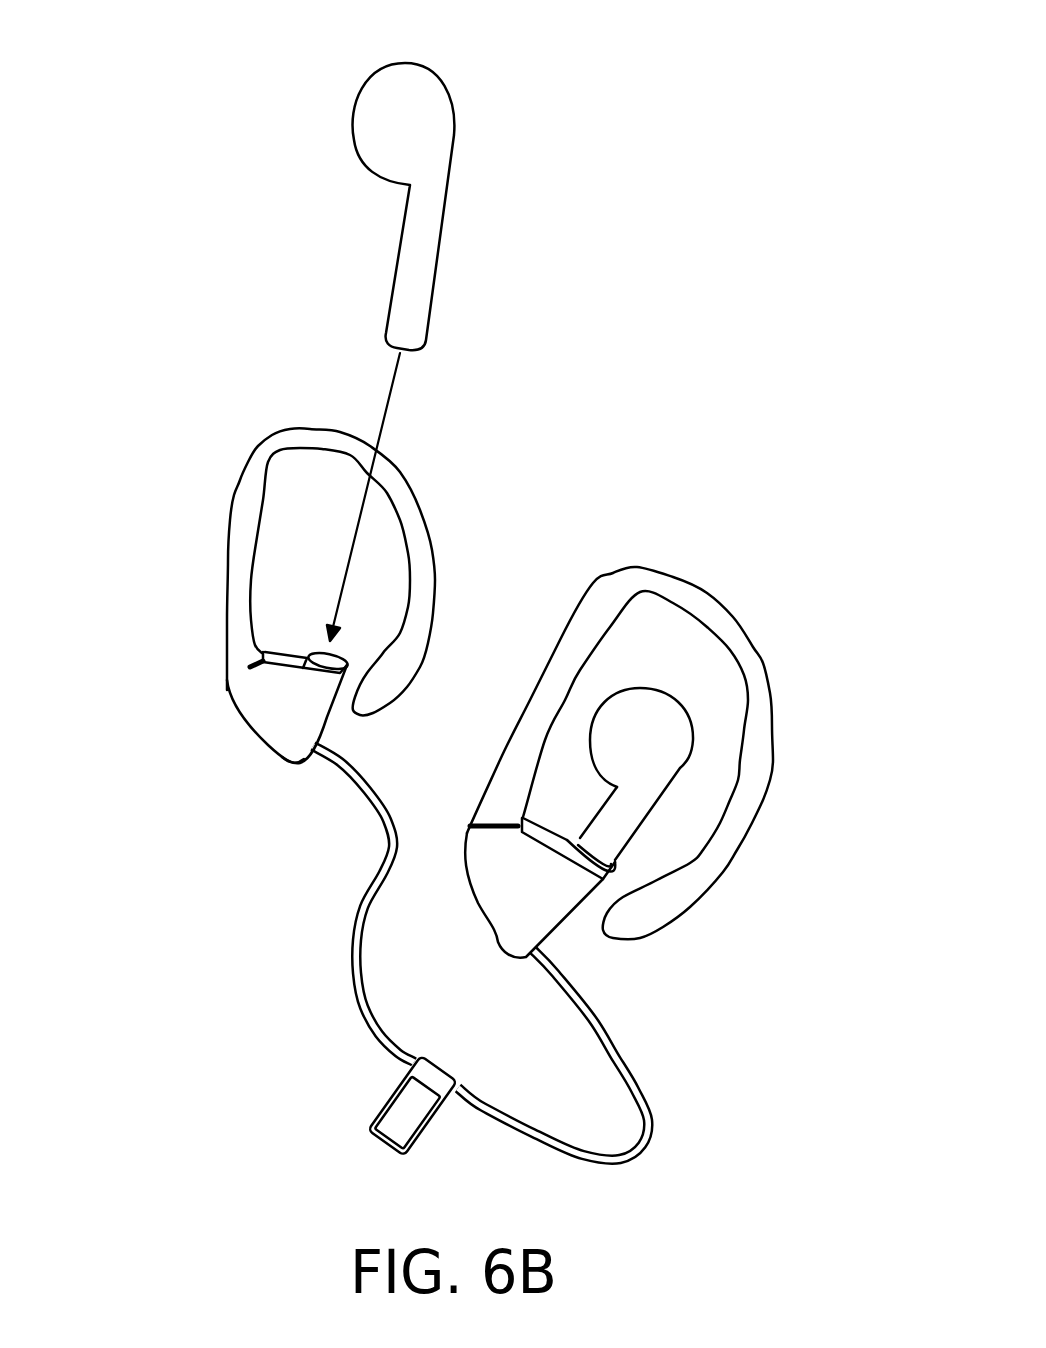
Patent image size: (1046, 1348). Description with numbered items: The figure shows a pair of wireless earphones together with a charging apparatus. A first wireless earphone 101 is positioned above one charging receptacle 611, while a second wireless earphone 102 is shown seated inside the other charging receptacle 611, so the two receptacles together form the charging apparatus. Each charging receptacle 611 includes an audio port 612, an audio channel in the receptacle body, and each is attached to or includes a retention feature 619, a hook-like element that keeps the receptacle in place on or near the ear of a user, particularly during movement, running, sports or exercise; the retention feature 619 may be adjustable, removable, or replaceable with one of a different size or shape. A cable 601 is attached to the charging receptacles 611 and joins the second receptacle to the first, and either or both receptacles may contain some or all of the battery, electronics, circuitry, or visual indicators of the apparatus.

The wireless earphone 101 is at (446, 98).
The wireless earphone 102 is at (648, 687).
The cable 601 is at (650, 1144).
The charging receptacle 611 is at (258, 690).
The audio port 612 is at (283, 760).
The retention feature 619 is at (238, 484).